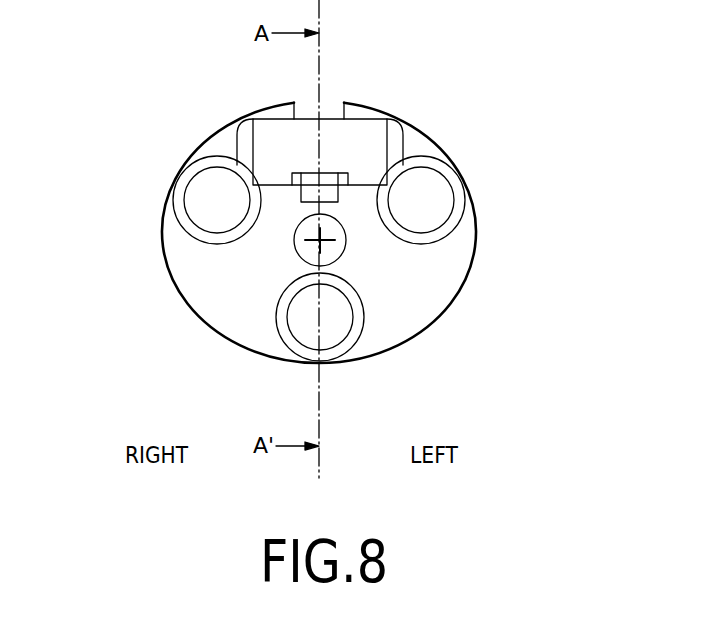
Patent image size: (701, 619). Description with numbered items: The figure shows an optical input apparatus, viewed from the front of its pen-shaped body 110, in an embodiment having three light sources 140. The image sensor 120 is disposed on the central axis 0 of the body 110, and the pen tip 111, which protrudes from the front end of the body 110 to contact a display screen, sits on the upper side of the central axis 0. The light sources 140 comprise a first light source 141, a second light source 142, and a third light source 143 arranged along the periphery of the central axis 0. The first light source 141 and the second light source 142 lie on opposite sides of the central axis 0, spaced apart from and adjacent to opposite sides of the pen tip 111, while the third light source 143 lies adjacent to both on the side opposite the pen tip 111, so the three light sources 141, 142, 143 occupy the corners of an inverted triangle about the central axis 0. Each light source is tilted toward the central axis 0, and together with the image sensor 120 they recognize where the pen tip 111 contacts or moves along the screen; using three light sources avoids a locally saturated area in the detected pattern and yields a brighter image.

The body 110 is at (471, 265).
The pen tip 111 is at (338, 128).
The image sensor 120 is at (347, 240).
The light sources 140 is at (129, 396).
The first light source 141 is at (438, 193).
The second light source 142 is at (205, 197).
The third light source 143 is at (310, 328).
The central axis 0 is at (330, 252).